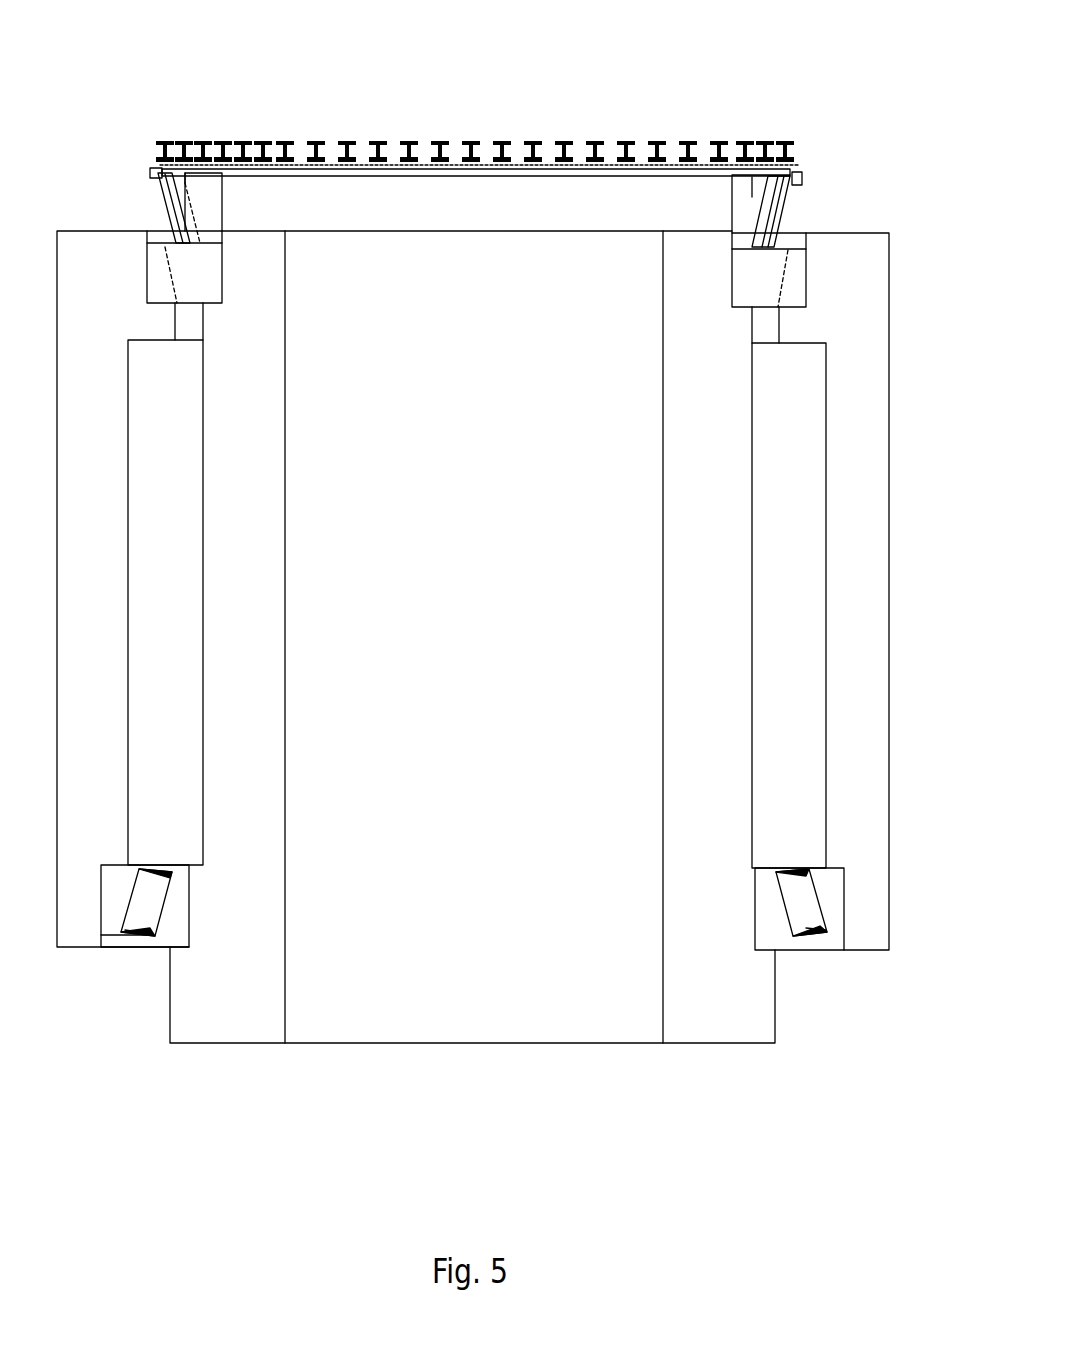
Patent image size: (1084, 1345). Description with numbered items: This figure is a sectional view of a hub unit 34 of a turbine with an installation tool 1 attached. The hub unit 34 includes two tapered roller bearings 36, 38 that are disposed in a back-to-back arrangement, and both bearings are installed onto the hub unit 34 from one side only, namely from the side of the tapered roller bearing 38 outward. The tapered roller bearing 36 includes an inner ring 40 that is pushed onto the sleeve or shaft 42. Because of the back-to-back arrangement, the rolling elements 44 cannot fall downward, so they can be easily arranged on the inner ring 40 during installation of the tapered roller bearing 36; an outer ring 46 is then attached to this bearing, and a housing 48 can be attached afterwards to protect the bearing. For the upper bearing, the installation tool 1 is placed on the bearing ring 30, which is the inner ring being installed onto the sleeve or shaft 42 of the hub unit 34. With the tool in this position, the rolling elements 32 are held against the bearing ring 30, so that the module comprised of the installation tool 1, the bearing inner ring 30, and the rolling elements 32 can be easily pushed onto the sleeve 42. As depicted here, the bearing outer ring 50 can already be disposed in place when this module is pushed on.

The installation tool 1 is at (680, 146).
The bearing ring 30 is at (762, 146).
The rolling elements 32 is at (772, 212).
The hub unit 34 is at (518, 92).
The tapered roller bearing 36 is at (834, 957).
The tapered roller bearing 38 is at (819, 247).
The inner ring 40 is at (778, 945).
The sleeve or shaft 42 is at (677, 1022).
The rolling elements 44 is at (828, 933).
The outer ring 46 is at (833, 908).
The housing 48 is at (873, 790).
The bearing outer ring 50 is at (793, 268).